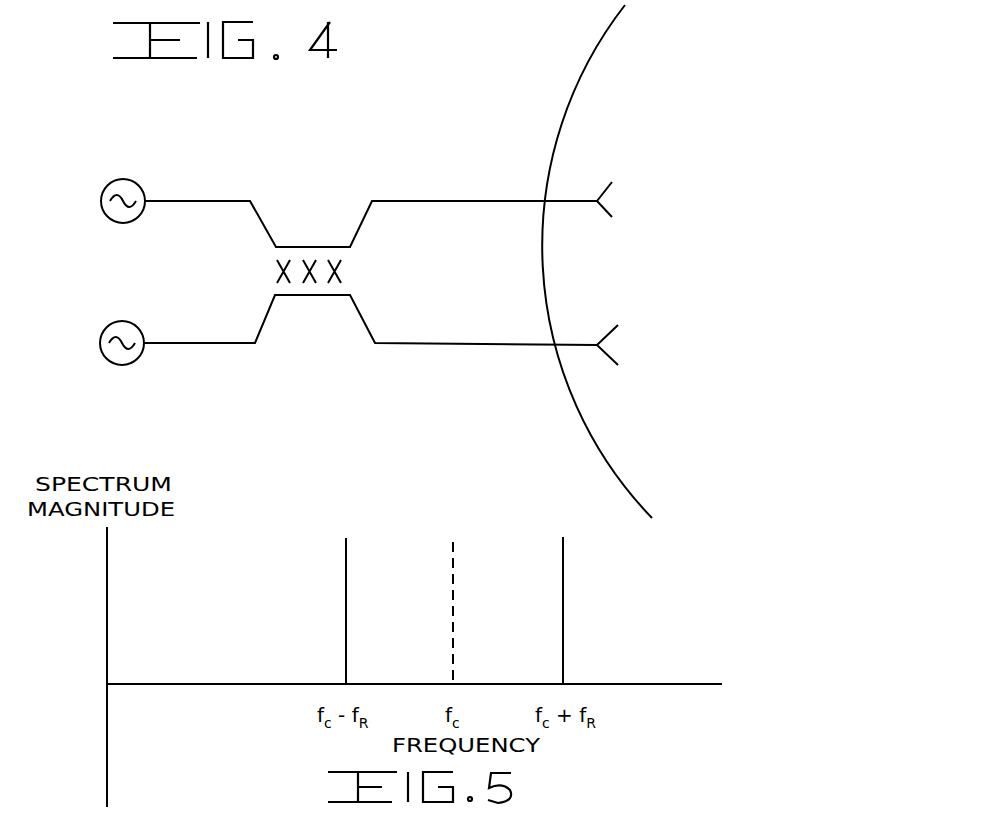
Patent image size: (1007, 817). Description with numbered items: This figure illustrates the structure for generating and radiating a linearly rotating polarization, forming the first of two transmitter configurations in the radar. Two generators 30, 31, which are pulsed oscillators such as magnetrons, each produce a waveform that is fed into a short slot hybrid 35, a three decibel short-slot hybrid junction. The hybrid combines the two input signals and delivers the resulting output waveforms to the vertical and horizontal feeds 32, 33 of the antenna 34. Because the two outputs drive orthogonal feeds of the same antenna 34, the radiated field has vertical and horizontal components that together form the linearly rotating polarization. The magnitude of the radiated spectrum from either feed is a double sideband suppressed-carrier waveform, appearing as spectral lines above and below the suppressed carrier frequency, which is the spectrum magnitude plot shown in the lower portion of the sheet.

The generator 30 is at (137, 216).
The generator 31 is at (136, 358).
The vertical feed 32 is at (603, 183).
The horizontal feed 33 is at (605, 333).
The antenna 34 is at (558, 133).
The short slot hybrid 35 is at (313, 220).